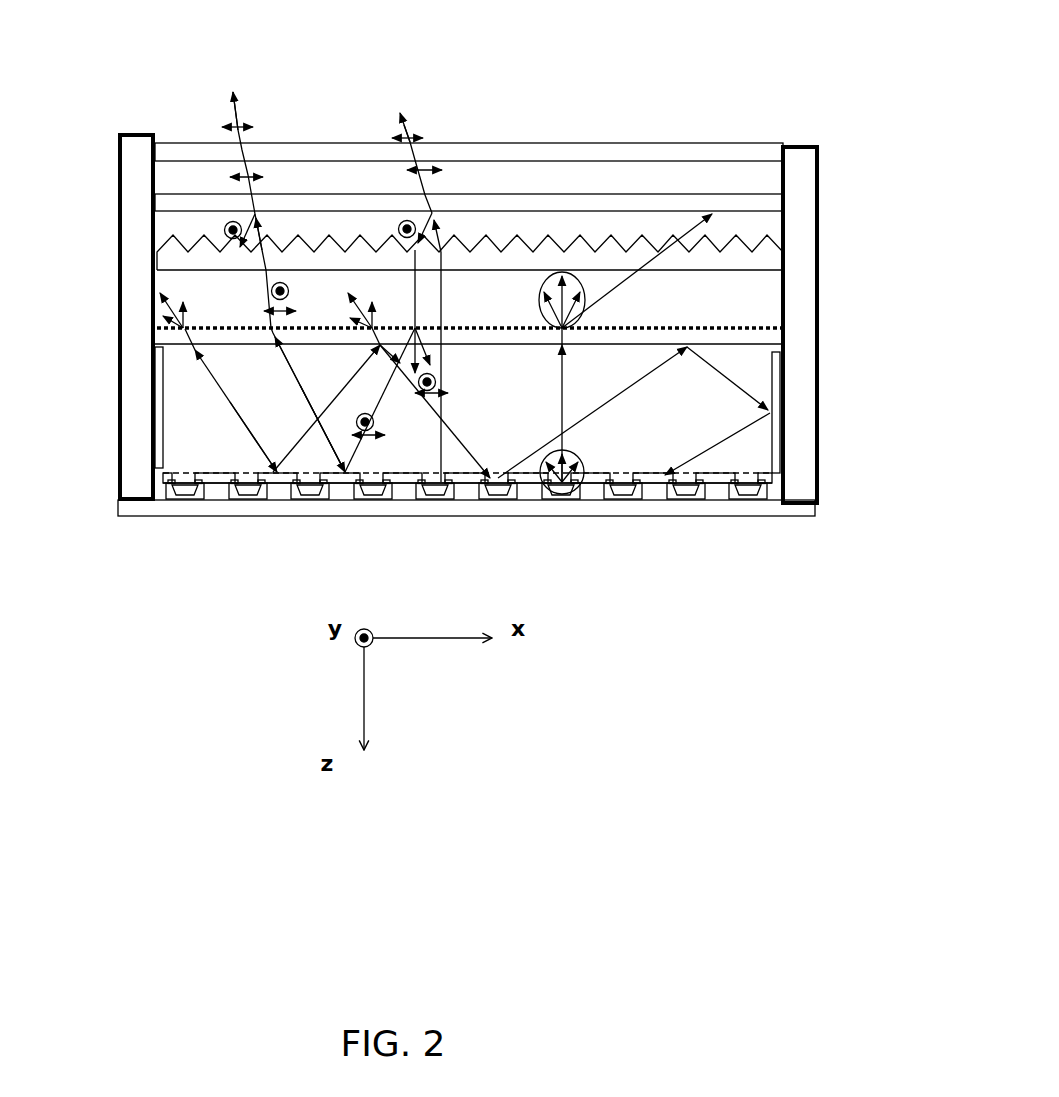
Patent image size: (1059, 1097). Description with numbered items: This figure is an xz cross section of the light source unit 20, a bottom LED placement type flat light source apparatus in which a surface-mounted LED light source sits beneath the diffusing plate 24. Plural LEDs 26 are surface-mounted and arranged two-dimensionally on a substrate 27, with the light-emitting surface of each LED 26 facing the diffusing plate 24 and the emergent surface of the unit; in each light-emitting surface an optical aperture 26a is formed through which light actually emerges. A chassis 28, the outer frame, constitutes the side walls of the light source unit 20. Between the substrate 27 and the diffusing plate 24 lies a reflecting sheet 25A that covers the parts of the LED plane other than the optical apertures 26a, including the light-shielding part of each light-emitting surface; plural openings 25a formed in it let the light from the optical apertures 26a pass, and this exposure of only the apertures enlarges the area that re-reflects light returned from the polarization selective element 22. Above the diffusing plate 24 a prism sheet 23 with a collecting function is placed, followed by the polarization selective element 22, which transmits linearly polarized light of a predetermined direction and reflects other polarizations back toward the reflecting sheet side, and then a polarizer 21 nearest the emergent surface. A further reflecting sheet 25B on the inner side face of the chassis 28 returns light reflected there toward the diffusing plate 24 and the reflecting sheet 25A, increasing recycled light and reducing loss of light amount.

The light source unit 20 is at (640, 113).
The polarizer 21 is at (767, 153).
The polarization selective element 22 is at (768, 205).
The prism sheet 23 is at (758, 263).
The diffusing plate 24 is at (742, 327).
The reflecting sheet 25A is at (602, 478).
The openings 25a is at (365, 490).
The reflecting sheet 25B is at (162, 417).
The LEDs 26 is at (733, 502).
The optical aperture 26a is at (377, 481).
The substrate 27 is at (790, 512).
The chassis 28 is at (142, 222).